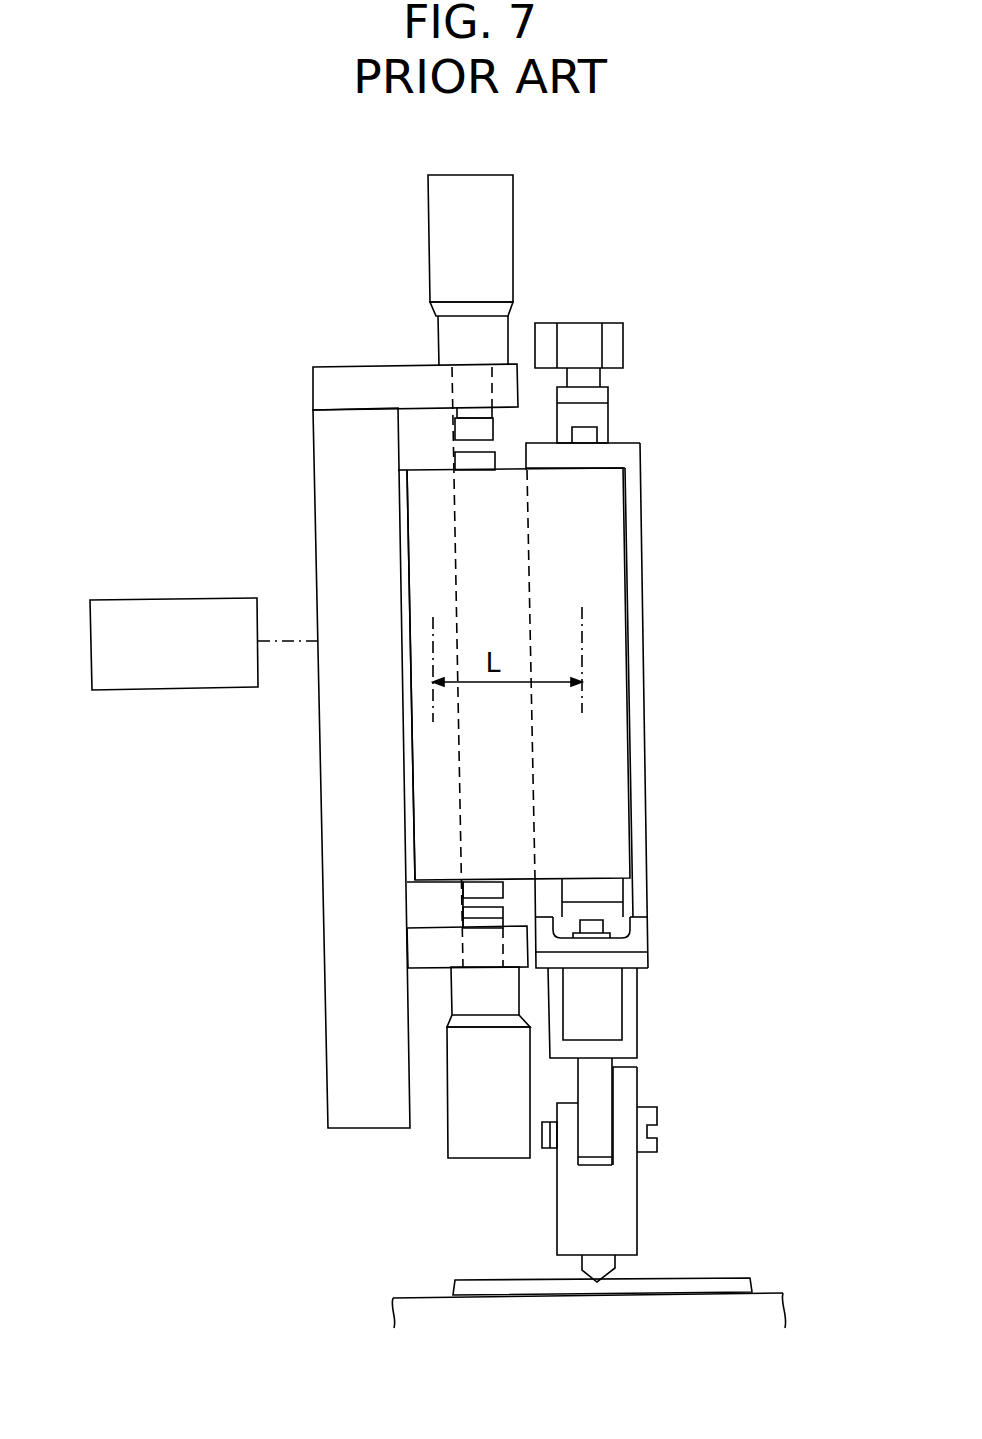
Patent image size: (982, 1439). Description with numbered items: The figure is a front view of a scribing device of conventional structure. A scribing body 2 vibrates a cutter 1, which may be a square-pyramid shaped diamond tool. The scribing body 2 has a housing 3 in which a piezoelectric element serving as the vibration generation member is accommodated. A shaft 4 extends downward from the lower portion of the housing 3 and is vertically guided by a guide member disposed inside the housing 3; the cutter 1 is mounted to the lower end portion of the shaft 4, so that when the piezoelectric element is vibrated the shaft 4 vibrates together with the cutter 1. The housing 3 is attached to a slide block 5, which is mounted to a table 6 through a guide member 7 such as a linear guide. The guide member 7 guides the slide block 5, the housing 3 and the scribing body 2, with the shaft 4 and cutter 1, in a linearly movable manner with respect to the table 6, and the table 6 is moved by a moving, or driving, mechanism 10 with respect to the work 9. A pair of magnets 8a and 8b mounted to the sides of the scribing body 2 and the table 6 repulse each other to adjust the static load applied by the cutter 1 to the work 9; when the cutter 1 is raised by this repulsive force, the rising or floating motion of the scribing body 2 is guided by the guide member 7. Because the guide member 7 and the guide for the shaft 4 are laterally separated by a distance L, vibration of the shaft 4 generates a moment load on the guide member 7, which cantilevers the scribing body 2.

The cutter 1 is at (613, 1268).
The scribing body 2 is at (642, 678).
The housing 3 is at (642, 753).
The shaft 4 is at (630, 1010).
The slide block 5 is at (602, 622).
The table 6 is at (342, 810).
The guide member 7 is at (425, 750).
The magnet 8a is at (468, 462).
The magnet 8b is at (495, 433).
The work 9 is at (738, 1278).
The moving mechanism 10 is at (180, 598).